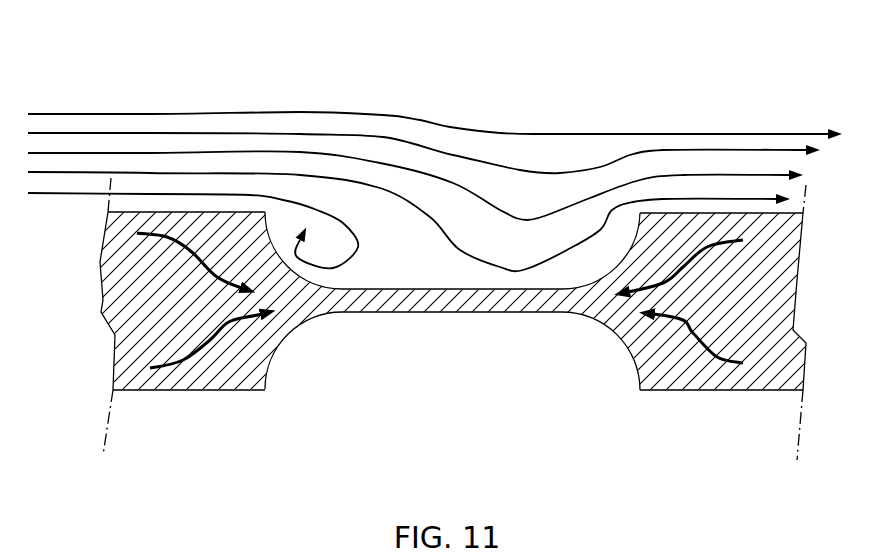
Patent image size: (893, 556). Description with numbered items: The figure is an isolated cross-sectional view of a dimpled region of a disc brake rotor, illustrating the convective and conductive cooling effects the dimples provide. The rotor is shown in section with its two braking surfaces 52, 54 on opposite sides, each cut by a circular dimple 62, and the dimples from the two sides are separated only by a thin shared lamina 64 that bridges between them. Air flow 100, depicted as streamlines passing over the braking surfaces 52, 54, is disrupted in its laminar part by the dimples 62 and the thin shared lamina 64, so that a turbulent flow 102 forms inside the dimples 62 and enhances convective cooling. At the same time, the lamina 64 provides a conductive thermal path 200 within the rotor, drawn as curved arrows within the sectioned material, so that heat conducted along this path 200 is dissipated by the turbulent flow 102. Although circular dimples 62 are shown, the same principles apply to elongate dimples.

The braking surface 52 is at (168, 212).
The braking surface 54 is at (205, 392).
The circular dimples 62 is at (615, 333).
The lamina 64 is at (443, 313).
The air flow 100 is at (263, 133).
The turbulent flow 102 is at (468, 197).
The conductive thermal path 200 is at (213, 347).